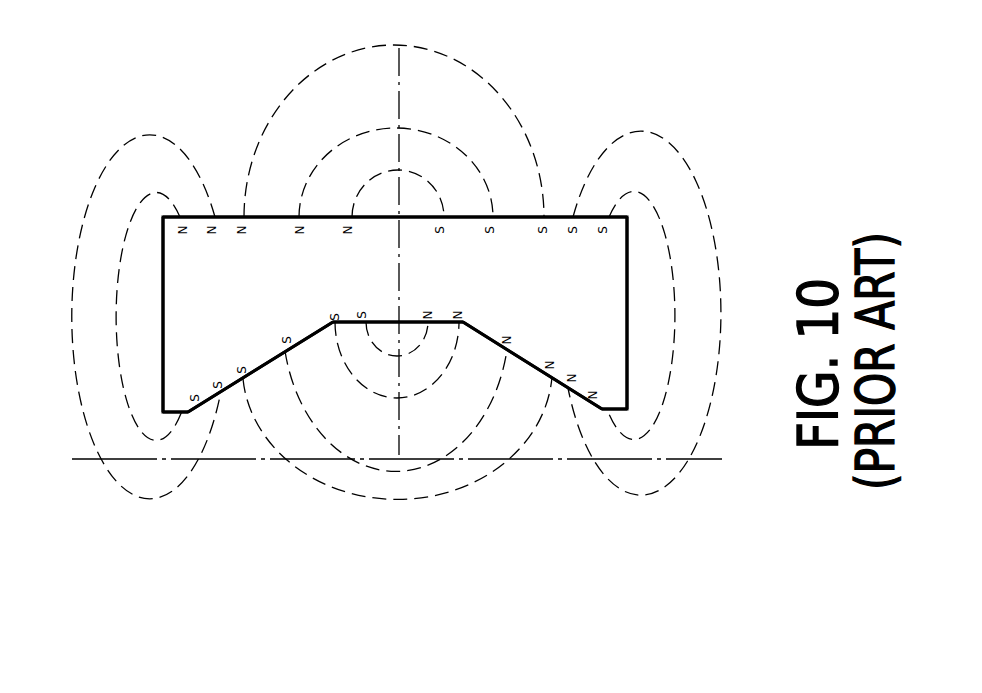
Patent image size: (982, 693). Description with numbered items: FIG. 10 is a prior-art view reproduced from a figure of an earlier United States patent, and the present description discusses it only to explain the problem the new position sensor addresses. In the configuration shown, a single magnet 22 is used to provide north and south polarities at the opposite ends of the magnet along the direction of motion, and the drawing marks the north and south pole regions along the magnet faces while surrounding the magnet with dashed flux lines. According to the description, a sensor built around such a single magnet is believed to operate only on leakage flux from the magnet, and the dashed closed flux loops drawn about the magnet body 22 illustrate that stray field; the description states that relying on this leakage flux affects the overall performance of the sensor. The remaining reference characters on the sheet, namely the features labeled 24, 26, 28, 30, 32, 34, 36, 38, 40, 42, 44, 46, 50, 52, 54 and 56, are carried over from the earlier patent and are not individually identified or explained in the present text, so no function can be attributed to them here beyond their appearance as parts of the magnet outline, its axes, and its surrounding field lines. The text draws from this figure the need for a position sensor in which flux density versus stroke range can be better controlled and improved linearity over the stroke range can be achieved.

The permanent magnet 22 is at (582, 293).
The central recessed face 24 is at (399, 321).
The inner magnetic flux line 26 is at (392, 318).
The left inclined face 28 is at (308, 332).
The right inclined face 30 is at (530, 356).
The left bottom face 32 is at (174, 410).
The right bottom face 34 is at (618, 407).
The top face north pole portion 36 is at (230, 216).
The horizontal reference axis 38 is at (547, 460).
The right side face 40 is at (628, 330).
The left side face 42 is at (162, 326).
The top face south pole portion 44 is at (533, 247).
The magnetic flux line above magnet 46 is at (397, 113).
The right outer magnetic flux line 50 is at (719, 354).
The left outer magnetic flux line 52 is at (90, 193).
The lower outer magnetic flux line 54 is at (330, 497).
The upper outer magnetic flux line 56 is at (317, 70).